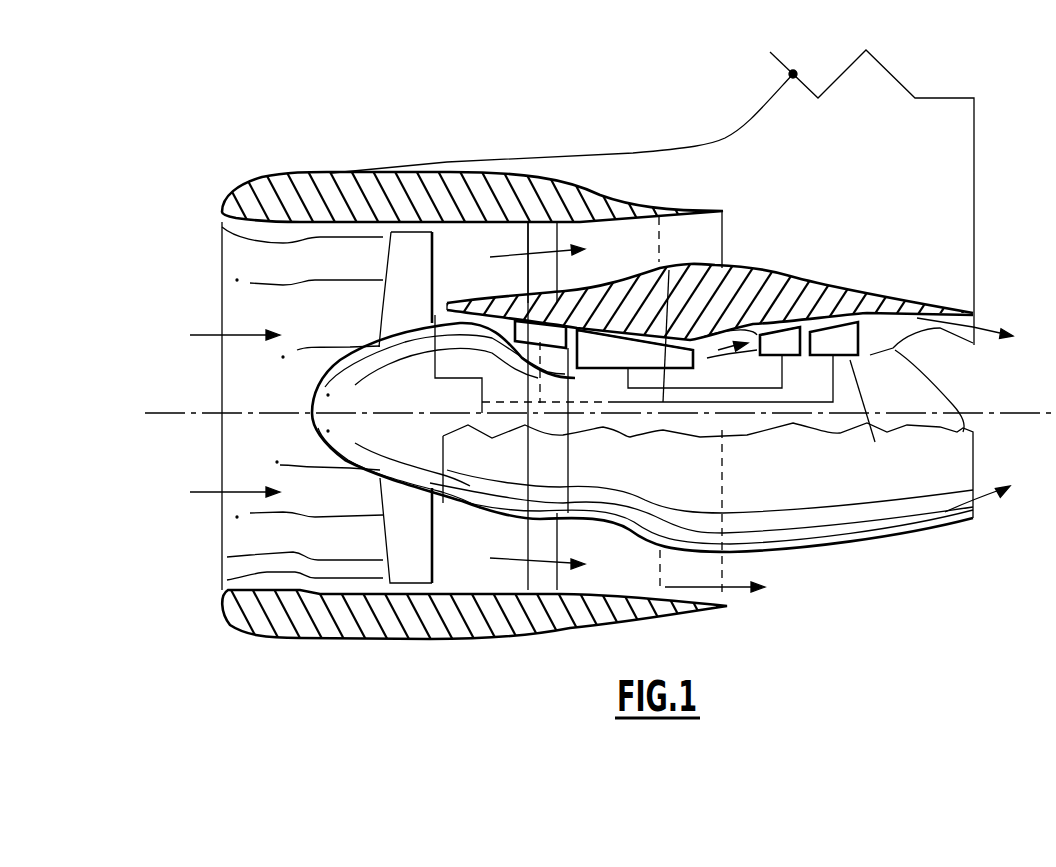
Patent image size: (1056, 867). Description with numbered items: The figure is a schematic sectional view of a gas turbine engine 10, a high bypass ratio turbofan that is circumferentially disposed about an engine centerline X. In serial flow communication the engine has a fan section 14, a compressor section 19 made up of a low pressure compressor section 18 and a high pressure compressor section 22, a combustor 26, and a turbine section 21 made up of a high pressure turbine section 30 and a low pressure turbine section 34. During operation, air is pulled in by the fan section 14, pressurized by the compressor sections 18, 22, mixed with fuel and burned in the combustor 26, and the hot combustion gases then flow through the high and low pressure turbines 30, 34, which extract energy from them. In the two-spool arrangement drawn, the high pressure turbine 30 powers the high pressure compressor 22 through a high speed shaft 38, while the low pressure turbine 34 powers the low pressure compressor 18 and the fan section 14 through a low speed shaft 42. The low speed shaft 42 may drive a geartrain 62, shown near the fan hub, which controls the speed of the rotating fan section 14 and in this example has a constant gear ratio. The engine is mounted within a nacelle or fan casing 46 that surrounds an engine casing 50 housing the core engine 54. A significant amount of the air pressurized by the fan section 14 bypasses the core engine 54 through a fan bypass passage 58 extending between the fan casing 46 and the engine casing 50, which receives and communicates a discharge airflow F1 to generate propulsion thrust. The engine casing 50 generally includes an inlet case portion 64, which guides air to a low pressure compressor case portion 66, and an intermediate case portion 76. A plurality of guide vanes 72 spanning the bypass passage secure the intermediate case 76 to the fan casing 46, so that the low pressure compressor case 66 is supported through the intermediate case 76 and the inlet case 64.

The gas turbine engine 10 is at (248, 140).
The fan section 14 is at (383, 547).
The low pressure compressor section 18 is at (541, 343).
The compressor section 19 is at (596, 349).
The turbine section 21 is at (803, 342).
The high pressure compressor section 22 is at (617, 357).
The combustor 26 is at (737, 347).
The high pressure turbine section 30 is at (792, 348).
The low pressure turbine section 34 is at (867, 357).
The high speed shaft 38 is at (708, 393).
The low speed shaft 42 is at (669, 270).
The fan casing 46 is at (327, 155).
The engine casing 50 is at (838, 335).
The core engine 54 is at (750, 393).
The fan bypass passage 58 is at (617, 240).
The geartrain 62 is at (472, 408).
The inlet case portion 64 is at (482, 490).
The low pressure compressor case portion 66 is at (550, 506).
The guide vanes 72 is at (547, 283).
The intermediate case portion 76 is at (583, 490).
The discharge airflow F1 is at (521, 254).
The engine centerline X is at (1042, 413).